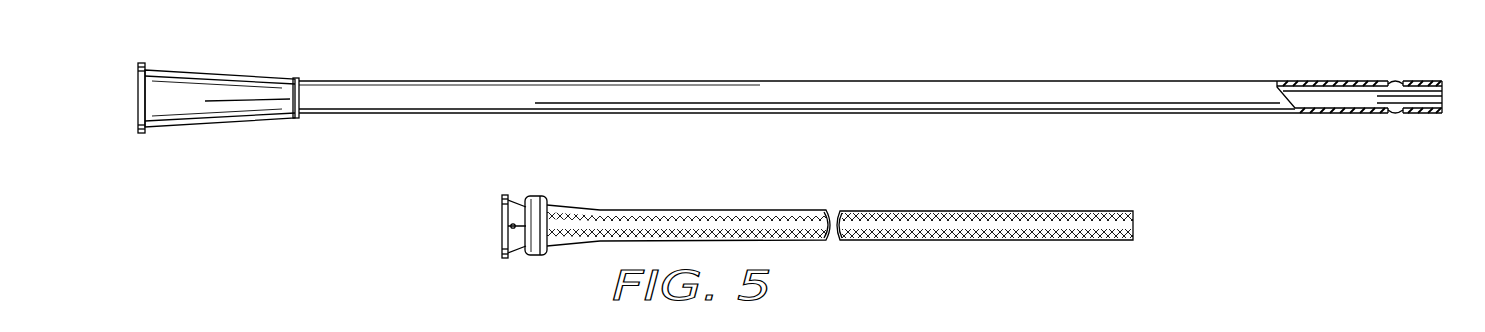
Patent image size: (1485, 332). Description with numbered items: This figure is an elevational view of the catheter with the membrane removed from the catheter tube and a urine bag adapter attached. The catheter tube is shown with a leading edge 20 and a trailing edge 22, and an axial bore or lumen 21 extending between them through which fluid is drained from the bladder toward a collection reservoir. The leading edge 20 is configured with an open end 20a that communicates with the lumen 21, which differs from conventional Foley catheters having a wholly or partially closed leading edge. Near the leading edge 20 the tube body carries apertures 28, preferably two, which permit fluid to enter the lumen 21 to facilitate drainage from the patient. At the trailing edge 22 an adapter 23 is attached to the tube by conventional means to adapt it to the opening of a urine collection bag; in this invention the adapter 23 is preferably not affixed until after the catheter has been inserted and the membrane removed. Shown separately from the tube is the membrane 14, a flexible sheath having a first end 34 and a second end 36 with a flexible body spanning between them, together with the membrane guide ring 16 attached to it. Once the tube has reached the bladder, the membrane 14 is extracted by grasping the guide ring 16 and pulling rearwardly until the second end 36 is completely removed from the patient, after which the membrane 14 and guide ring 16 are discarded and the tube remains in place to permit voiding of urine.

The membrane 14 is at (803, 213).
The membrane guide ring 16 is at (546, 234).
The leading edge 20 is at (801, 102).
The open end 20a is at (1450, 92).
The axial bore (lumen) 21 is at (862, 93).
The trailing edge 22 is at (218, 102).
The adapter 23 is at (168, 128).
The aperture 28 is at (1394, 82).
The first end 34 is at (545, 247).
The second end 36 is at (1128, 212).